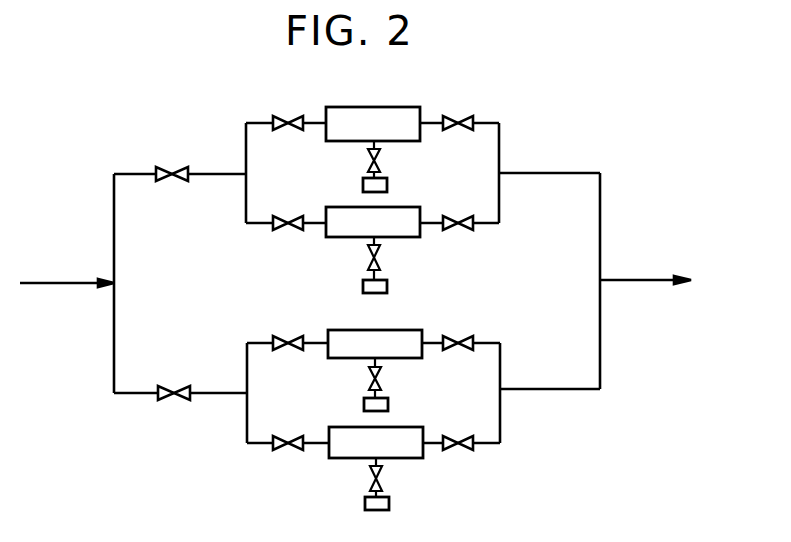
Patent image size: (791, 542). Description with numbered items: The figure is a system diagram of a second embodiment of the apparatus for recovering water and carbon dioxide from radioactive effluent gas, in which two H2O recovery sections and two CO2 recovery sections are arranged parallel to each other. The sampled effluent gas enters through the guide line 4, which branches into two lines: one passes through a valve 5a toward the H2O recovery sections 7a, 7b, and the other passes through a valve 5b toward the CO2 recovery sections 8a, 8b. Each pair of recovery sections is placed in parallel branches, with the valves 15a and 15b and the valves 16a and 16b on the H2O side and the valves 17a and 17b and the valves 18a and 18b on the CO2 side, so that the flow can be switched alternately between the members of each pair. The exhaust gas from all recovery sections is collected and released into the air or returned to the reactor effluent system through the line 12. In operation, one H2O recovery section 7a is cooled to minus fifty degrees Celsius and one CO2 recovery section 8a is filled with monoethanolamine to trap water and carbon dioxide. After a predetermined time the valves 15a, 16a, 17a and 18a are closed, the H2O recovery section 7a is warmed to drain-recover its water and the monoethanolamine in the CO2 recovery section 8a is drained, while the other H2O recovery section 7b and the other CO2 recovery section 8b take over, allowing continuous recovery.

The guide line 4 is at (56, 286).
The line 12 is at (651, 283).
The valve 5a is at (170, 167).
The valve 5b is at (172, 387).
The H2O recovery section 7a is at (399, 107).
The H2O recovery section 7b is at (410, 207).
The CO2 recovery section 8a is at (405, 330).
The CO2 recovery section 8b is at (410, 427).
The valve 15a is at (285, 116).
The valve 15b is at (286, 216).
The valve 16a is at (453, 116).
The valve 16b is at (453, 216).
The valve 17a is at (287, 336).
The valve 17b is at (287, 436).
The valve 18a is at (456, 336).
The valve 18b is at (456, 436).